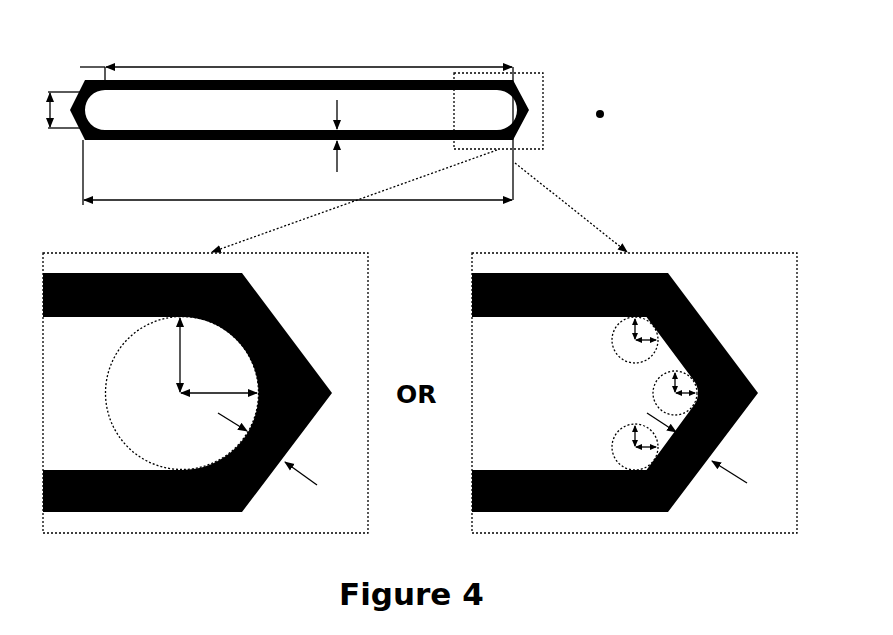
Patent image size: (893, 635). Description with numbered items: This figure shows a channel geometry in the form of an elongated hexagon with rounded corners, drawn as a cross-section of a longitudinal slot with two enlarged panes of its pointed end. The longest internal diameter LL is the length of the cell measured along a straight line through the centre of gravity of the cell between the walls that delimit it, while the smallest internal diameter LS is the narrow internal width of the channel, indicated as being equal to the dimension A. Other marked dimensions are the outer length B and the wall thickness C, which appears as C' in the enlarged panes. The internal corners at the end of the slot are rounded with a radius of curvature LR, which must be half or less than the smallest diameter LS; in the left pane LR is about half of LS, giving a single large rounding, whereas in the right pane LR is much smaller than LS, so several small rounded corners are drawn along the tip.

The inner channel height (distance between inner walls) A is at (47, 110).
The length of the straight outer wall portion B is at (296, 114).
The wall thickness C is at (355, 145).
The longest internal diameter LL is at (297, 172).
The radius of curvature LR is at (616, 345).
The wall thickness at the tip in enlarged view C' is at (536, 482).
The smallest internal diameter LS is at (645, 115).